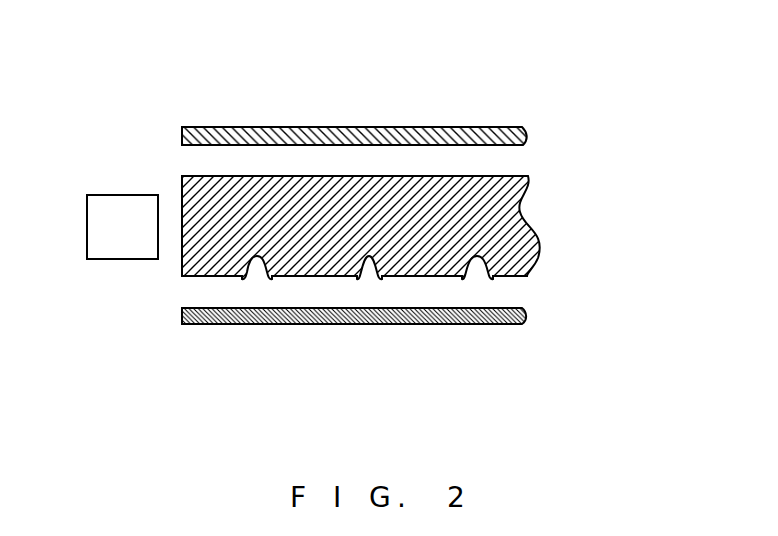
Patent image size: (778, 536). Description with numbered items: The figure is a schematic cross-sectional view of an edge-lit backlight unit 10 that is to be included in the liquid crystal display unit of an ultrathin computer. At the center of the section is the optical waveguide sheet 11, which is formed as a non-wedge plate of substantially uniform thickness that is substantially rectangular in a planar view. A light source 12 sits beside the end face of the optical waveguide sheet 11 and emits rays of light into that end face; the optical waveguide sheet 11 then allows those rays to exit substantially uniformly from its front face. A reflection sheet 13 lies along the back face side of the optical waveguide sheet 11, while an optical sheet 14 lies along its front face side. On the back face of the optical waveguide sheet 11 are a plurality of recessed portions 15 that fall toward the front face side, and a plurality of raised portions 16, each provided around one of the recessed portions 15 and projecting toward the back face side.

The backlight unit 10 is at (586, 103).
The optical waveguide sheet 11 is at (521, 218).
The light source 12 is at (97, 230).
The reflection sheet 13 is at (182, 322).
The optical sheet 14 is at (221, 139).
The recessed portions 15 is at (368, 259).
The raised portions 16 is at (361, 259).